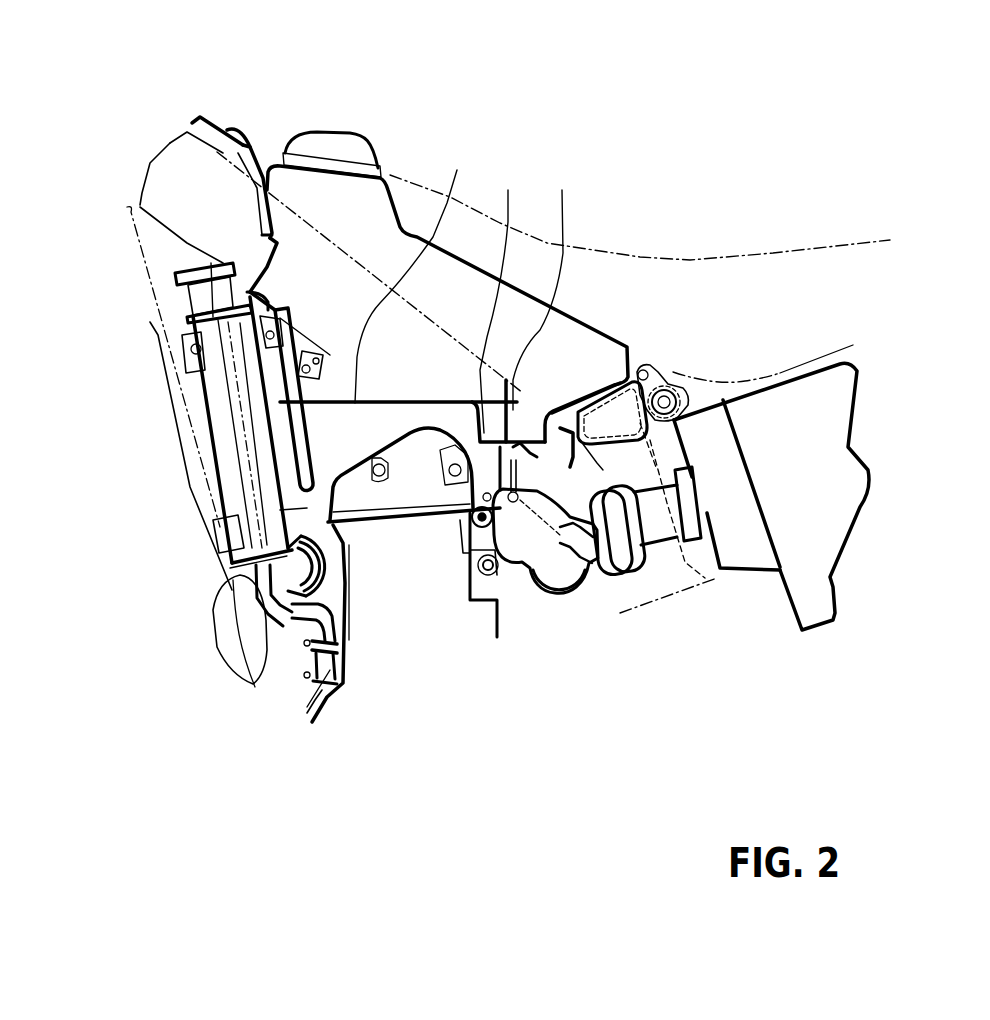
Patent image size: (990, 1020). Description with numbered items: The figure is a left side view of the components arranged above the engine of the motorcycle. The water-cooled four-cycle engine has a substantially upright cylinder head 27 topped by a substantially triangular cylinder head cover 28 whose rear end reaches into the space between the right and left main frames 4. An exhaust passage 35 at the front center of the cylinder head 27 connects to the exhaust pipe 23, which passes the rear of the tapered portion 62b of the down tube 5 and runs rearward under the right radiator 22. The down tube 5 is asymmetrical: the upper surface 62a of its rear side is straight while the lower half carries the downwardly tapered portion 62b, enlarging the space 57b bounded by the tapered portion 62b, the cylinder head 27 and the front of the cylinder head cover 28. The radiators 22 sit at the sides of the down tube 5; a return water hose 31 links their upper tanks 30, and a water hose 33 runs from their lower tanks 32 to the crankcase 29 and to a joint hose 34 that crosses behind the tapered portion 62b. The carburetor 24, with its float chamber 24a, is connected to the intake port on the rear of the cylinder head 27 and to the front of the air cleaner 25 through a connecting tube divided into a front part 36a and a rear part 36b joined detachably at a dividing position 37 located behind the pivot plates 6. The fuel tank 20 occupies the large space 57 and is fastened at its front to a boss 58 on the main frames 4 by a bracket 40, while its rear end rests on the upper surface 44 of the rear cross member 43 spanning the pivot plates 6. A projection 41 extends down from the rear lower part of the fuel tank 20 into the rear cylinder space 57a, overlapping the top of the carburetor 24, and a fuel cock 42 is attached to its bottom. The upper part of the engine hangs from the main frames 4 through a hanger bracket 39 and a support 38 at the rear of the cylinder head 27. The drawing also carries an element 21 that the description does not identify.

The main frames 4 is at (172, 145).
The down tube 5 is at (155, 337).
The pivot plates 6 is at (678, 594).
The fuel tank 20 is at (380, 180).
The main frame 21 is at (773, 262).
The radiators 22 is at (222, 437).
The exhaust pipe 23 is at (216, 640).
The carburetor 24 is at (545, 508).
The float chamber 24a is at (567, 580).
The air cleaner 25 is at (842, 527).
The cylinder head 27 is at (410, 597).
The cylinder head cover 28 is at (403, 467).
The crankcase 29 is at (307, 713).
The upper tanks 30 is at (187, 300).
The return water hose 31 is at (304, 468).
The lower tanks 32 is at (230, 583).
The water hose 33 is at (250, 660).
The joint hose 34 is at (312, 683).
The exhaust passage 35 is at (347, 600).
The front part 36a is at (658, 540).
The rear part 36b is at (752, 543).
The dividing position 37 is at (690, 508).
The support 38 is at (472, 558).
The hanger bracket 39 is at (462, 517).
The bracket 40 is at (230, 130).
The projection 41 is at (543, 285).
The fuel cock 42 is at (543, 410).
The rear cross member 43 is at (633, 353).
The upper surface 44 is at (677, 372).
The space 57 is at (415, 273).
The rear cylinder space 57a is at (508, 297).
The space 57b is at (300, 510).
The boss 58 is at (250, 143).
The upper surface 62a is at (248, 395).
The tapered portion 62b is at (222, 535).